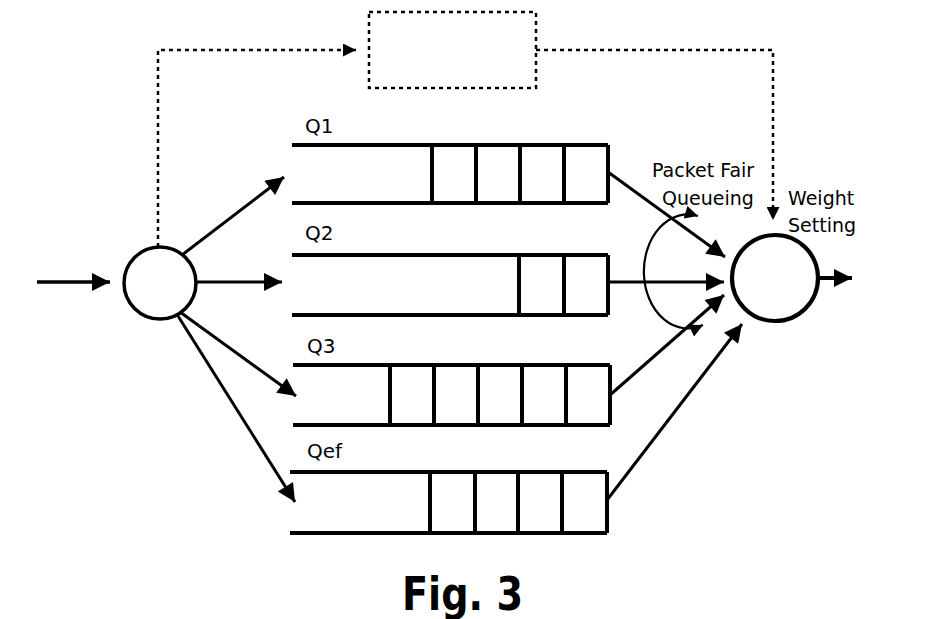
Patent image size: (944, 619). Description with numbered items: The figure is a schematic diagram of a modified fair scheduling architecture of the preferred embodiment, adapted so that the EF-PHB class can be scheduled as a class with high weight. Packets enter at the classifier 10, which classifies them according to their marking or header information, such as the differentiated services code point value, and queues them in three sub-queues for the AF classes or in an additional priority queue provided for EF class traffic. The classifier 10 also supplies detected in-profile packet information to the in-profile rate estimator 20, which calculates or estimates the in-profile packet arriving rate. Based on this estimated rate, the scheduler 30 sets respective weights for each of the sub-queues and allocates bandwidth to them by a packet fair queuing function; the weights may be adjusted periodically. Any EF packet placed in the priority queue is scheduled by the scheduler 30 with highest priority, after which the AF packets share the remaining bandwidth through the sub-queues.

The classifier 10 is at (160, 283).
The in-profile rate estimator 20 is at (465, 129).
The scheduler 30 is at (775, 278).